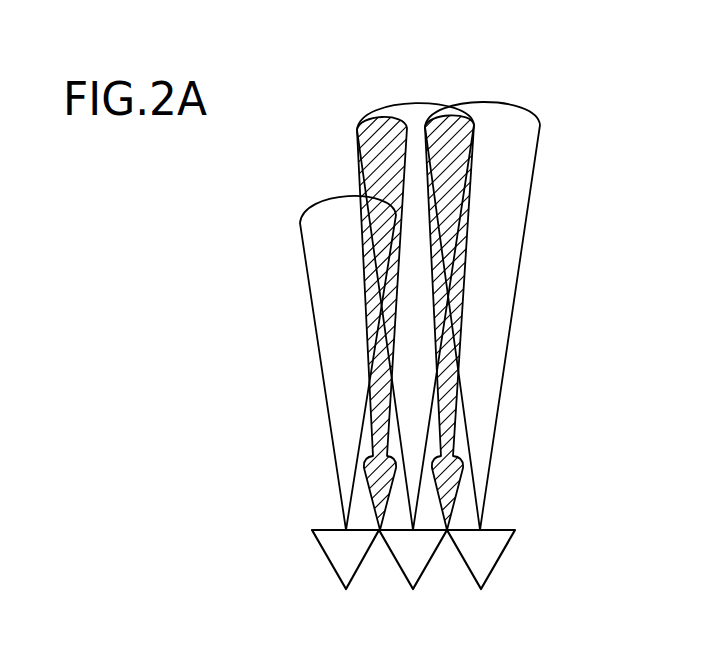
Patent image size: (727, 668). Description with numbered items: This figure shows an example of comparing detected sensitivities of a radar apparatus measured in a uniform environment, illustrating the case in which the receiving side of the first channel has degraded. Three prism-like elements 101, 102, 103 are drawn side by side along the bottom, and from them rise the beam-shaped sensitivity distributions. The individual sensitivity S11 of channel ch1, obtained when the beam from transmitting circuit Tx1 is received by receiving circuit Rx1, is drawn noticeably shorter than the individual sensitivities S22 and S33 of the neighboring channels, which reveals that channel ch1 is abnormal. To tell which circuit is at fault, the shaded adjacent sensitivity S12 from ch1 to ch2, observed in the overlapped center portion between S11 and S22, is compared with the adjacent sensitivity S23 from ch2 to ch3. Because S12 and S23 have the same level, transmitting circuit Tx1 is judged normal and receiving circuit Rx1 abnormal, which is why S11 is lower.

The first prism 101 is at (326, 556).
The second prism 102 is at (398, 562).
The third prism 103 is at (498, 560).
The sensitivity characteristic S11 is at (310, 267).
The sensitivity characteristic S12 is at (364, 124).
The sensitivity characteristic S22 is at (420, 110).
The adjacent sensitivity S23 is at (474, 125).
The individual sensitivity S33 is at (525, 212).